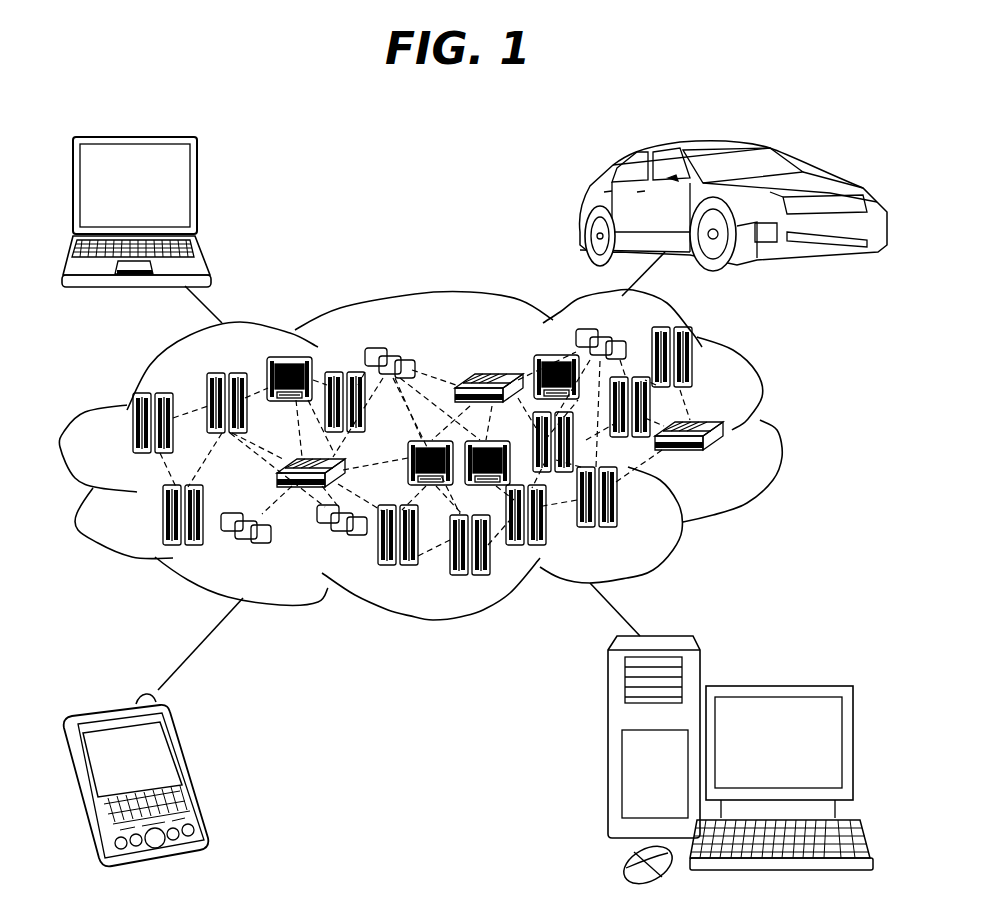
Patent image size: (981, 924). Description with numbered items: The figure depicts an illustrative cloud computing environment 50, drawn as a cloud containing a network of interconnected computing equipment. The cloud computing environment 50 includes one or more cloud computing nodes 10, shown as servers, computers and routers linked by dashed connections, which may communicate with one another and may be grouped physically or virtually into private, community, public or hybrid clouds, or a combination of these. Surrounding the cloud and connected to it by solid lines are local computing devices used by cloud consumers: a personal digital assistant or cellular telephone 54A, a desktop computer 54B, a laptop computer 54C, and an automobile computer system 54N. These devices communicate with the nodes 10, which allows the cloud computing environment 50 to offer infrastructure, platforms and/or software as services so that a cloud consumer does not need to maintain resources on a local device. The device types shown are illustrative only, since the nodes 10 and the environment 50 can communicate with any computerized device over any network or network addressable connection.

The cloud computing nodes 10 is at (725, 462).
The cloud computing environment 50 is at (777, 432).
The personal digital assistant or cellular telephone 54A is at (199, 775).
The desktop computer 54B is at (775, 686).
The laptop computer 54C is at (198, 193).
The automobile computer system 54N is at (581, 208).